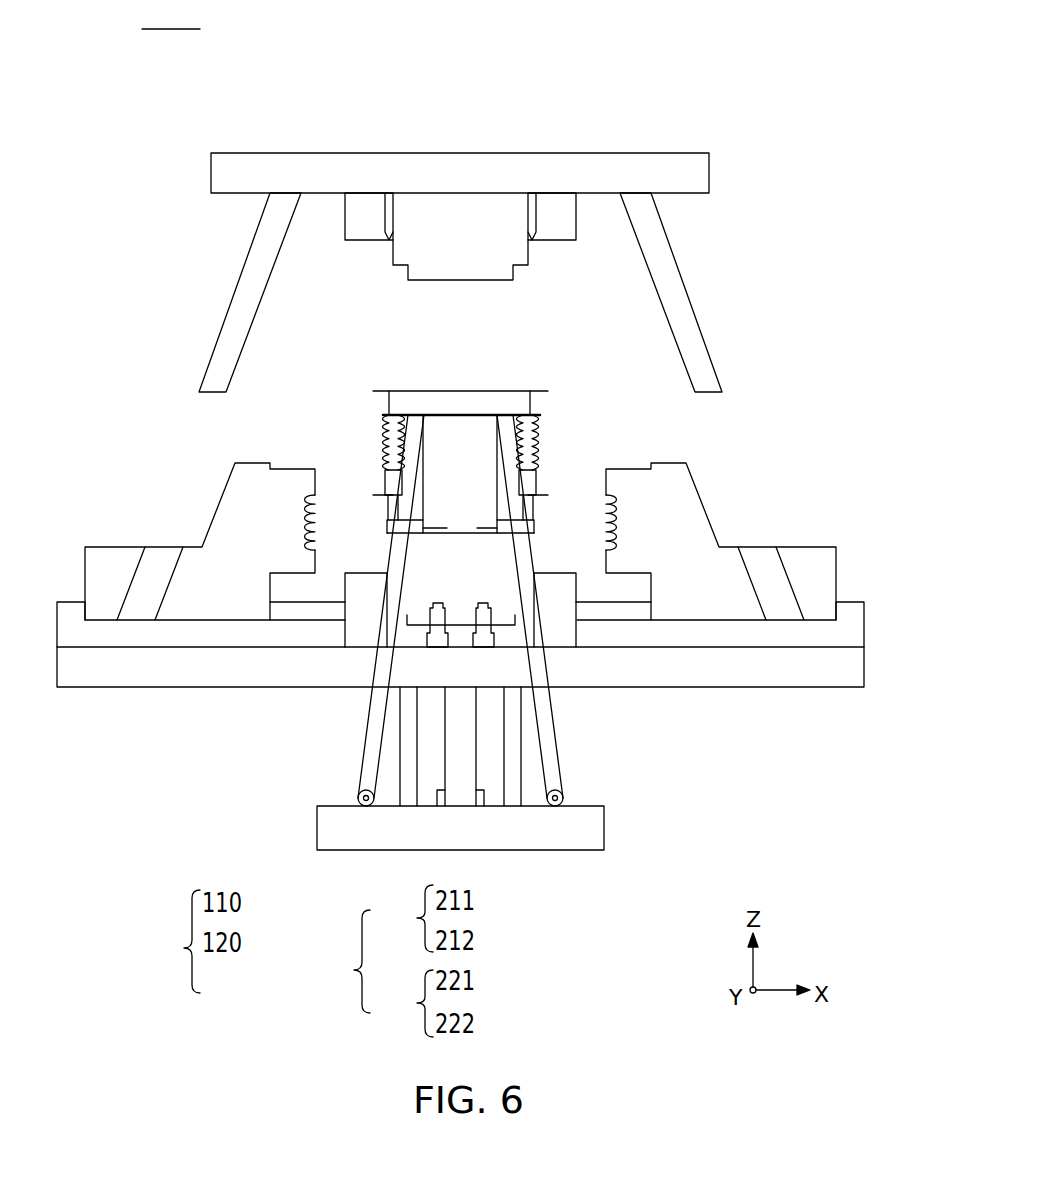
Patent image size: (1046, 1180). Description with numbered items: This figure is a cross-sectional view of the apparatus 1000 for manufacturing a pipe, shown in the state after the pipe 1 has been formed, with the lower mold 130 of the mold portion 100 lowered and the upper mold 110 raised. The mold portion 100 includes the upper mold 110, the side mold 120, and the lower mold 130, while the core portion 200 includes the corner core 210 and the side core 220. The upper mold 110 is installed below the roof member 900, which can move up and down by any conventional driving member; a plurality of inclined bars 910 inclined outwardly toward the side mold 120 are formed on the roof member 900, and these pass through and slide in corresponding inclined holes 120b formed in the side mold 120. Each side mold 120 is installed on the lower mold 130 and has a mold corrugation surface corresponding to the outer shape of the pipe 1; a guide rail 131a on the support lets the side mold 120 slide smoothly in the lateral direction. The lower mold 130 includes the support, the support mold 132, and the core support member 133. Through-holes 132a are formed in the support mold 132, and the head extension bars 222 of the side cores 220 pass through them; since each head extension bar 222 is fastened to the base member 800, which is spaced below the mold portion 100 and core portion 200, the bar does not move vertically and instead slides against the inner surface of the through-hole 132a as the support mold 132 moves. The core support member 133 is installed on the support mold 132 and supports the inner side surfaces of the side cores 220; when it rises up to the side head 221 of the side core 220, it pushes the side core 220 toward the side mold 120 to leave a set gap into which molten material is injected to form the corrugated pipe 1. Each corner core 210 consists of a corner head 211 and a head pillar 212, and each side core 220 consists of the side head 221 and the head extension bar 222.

The apparatus for manufacturing a pipe 1000 is at (171, 17).
The pipe 1 is at (547, 380).
The mold portion 100 is at (171, 941).
The upper mold 110 is at (577, 213).
The side mold 120 is at (115, 547).
The inclined hole 120b is at (140, 570).
The lower mold 130 is at (460, 821).
The guide rail 131a is at (73, 607).
The support mold 132 is at (558, 580).
The through-hole 132a is at (392, 618).
The core support member 133 is at (502, 585).
The core portion 200 is at (339, 961).
The corner core 210 is at (403, 918).
The corner head 211 is at (392, 417).
The head pillar 212 is at (400, 757).
The side core 220 is at (403, 1003).
The side head 221 is at (507, 418).
The head extension bar 222 is at (365, 777).
The base member 800 is at (604, 833).
The roof member 900 is at (290, 155).
The inclined bar 910 is at (247, 272).